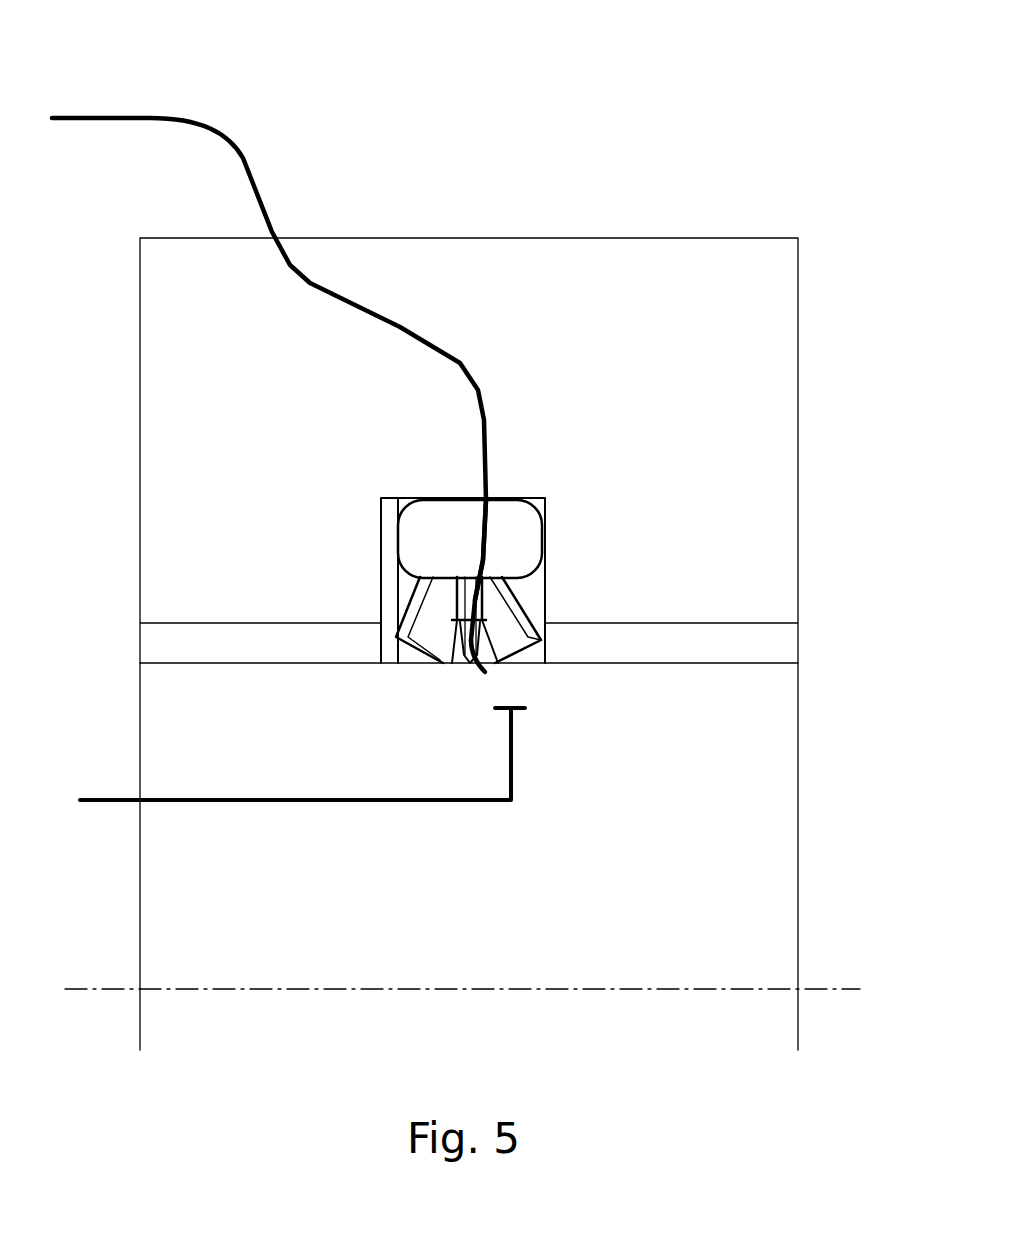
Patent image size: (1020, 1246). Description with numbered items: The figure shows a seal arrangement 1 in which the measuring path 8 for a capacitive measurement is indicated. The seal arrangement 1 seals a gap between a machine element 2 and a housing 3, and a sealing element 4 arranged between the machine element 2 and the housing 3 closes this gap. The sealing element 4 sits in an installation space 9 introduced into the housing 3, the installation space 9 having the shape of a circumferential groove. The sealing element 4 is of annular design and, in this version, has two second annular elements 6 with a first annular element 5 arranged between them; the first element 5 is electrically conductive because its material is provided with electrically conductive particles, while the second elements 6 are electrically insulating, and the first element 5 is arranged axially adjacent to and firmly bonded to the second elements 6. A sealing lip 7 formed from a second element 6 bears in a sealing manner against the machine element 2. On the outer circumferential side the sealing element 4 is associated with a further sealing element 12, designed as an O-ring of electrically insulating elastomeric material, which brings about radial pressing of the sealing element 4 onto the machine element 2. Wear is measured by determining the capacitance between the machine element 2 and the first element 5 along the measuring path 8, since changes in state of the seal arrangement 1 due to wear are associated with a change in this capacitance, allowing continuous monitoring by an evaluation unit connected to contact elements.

The seal arrangement 1 is at (770, 115).
The machine element 2 is at (775, 853).
The housing 3 is at (787, 310).
The sealing element 4 is at (433, 585).
The first annular element 5 is at (485, 672).
The second annular element 6 is at (423, 623).
The sealing lip 7 is at (480, 592).
The measuring path 8 is at (147, 117).
The installation space 9 is at (545, 505).
The further sealing element 12 is at (502, 510).